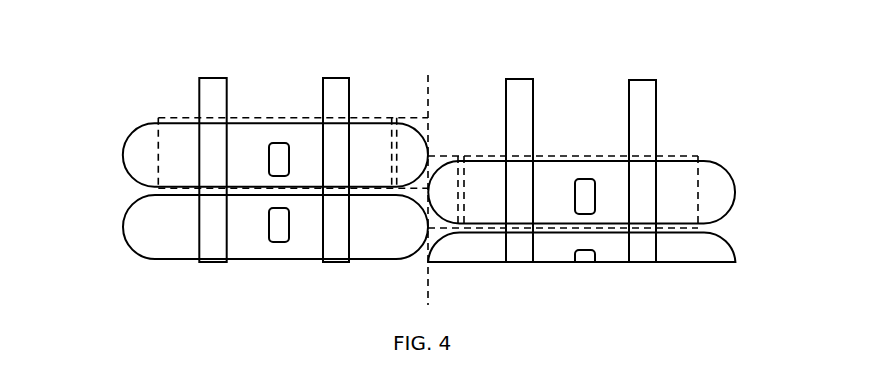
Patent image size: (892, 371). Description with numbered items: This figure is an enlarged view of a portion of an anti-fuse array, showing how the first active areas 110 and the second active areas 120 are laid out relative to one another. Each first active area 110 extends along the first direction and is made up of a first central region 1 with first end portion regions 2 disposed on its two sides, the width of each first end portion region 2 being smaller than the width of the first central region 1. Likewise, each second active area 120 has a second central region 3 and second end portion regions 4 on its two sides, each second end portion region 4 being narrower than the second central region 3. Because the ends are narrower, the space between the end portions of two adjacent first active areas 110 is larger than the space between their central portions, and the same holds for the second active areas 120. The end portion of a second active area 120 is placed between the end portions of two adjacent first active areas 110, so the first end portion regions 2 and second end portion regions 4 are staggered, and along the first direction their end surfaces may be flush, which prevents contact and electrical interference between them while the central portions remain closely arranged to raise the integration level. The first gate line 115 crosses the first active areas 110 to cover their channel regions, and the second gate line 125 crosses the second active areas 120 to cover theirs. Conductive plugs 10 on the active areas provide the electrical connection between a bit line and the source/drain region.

The first central region 1 is at (158, 118).
The first end portion region 2 is at (429, 116).
The second central region 3 is at (698, 157).
The second end portion region 4 is at (460, 155).
The conductive plug 10 is at (278, 143).
The first active area 110 is at (150, 150).
The first gate line 115 is at (338, 90).
The second active area 120 is at (705, 186).
The second gate line 125 is at (517, 97).